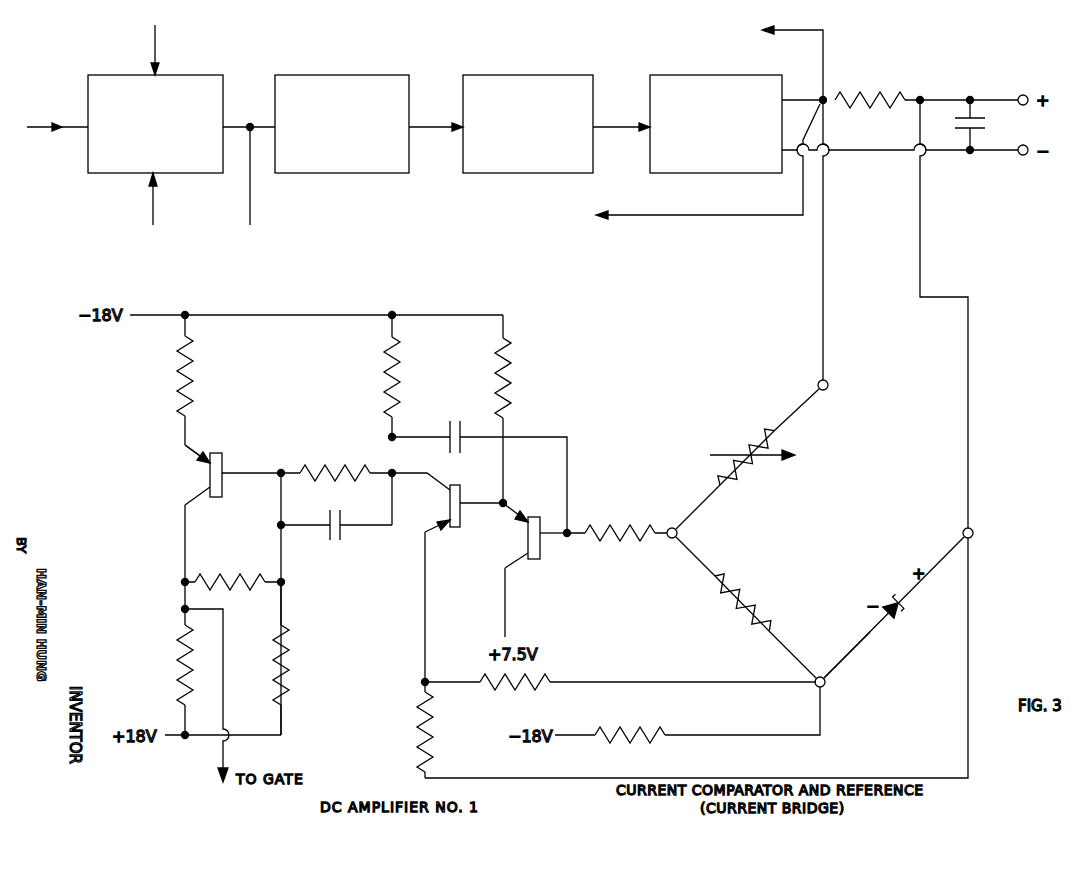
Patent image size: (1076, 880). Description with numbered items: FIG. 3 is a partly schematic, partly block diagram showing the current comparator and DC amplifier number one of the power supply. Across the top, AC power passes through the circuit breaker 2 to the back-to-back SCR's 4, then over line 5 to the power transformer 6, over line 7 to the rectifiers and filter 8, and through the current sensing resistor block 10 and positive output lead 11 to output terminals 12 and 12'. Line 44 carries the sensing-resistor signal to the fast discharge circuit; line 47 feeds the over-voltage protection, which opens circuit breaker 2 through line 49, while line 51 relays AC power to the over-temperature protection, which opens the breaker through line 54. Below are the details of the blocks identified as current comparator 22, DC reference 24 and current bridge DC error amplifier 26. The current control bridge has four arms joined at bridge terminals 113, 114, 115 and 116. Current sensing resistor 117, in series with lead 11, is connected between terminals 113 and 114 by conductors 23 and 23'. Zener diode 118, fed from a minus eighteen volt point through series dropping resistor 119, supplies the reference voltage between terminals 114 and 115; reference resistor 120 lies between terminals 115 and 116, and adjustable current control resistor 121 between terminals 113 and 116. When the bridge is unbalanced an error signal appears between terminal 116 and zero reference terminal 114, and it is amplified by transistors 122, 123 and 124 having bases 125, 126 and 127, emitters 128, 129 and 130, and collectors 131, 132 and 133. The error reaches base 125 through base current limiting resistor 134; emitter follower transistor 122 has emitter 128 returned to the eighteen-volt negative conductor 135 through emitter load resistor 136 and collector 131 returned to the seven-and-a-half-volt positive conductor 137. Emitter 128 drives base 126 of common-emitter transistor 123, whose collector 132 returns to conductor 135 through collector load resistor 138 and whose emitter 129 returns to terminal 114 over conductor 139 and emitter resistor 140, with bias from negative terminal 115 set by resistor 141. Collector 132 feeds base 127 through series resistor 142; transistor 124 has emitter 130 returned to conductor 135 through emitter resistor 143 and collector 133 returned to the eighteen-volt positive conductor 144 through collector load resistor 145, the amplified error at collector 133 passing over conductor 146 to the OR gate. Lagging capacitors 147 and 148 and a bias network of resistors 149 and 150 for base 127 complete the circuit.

The circuit breaker 2 is at (183, 75).
The back-to-back silicon controlled rectifiers 4 is at (352, 75).
The line 5 is at (436, 111).
The power transformer 6 is at (543, 75).
The line 7 is at (621, 111).
The rectifiers and filter 8 is at (705, 75).
The current sensing resistor 10 is at (883, 102).
The positive output lead 11 is at (956, 98).
The output terminal 12 is at (1021, 88).
The negative output terminal 12' is at (1003, 161).
The current comparator 22 is at (661, 406).
The DC reference 24 is at (681, 430).
The current bridge DC error amplifier No. 1 26 is at (782, 481).
The conductor 23 is at (840, 240).
The conductor 23' is at (944, 314).
The line 44 is at (673, 214).
The line 47 is at (823, 50).
The line 49 is at (155, 50).
The line 51 is at (250, 198).
The line 54 is at (153, 200).
The bridge terminal 113 is at (828, 387).
The bridge terminal 114 is at (973, 535).
The bridge terminal 115 is at (823, 687).
The bridge terminal 116 is at (670, 528).
The current sensing resistor 117 is at (885, 106).
The Zener diode 118 is at (883, 597).
The series dropping resistor 119 is at (642, 726).
The reference resistor 120 is at (757, 594).
The current control resistor 121 is at (743, 446).
The transistor 122 is at (524, 560).
The transistor 123 is at (458, 485).
The transistor 124 is at (222, 452).
The base 125 is at (540, 550).
The base 126 is at (462, 508).
The base 127 is at (222, 470).
The emitter 128 is at (515, 512).
The emitter 129 is at (432, 535).
The emitter 130 is at (197, 455).
The collector 131 is at (510, 564).
The collector 132 is at (437, 492).
The collector 133 is at (198, 500).
The base current limiting resistor 134 is at (620, 524).
The 18 volt negative conductor 135 is at (306, 315).
The emitter load resistor 136 is at (510, 380).
The 7.5 volt positive conductor 137 is at (505, 615).
The collector load resistor 138 is at (400, 370).
The conductor 139 is at (528, 778).
The emitter resistor 140 is at (432, 734).
The resistor 141 is at (522, 695).
The series resistor 142 is at (334, 468).
The emitter resistor 143 is at (208, 380).
The 18 volt positive conductor 144 is at (177, 728).
The collector load resistor 145 is at (180, 662).
The conductor 146 is at (224, 728).
The lagging capacitor 147 is at (448, 426).
The lagging capacitor 148 is at (342, 522).
The resistor 149 is at (288, 670).
The resistor 150 is at (238, 572).